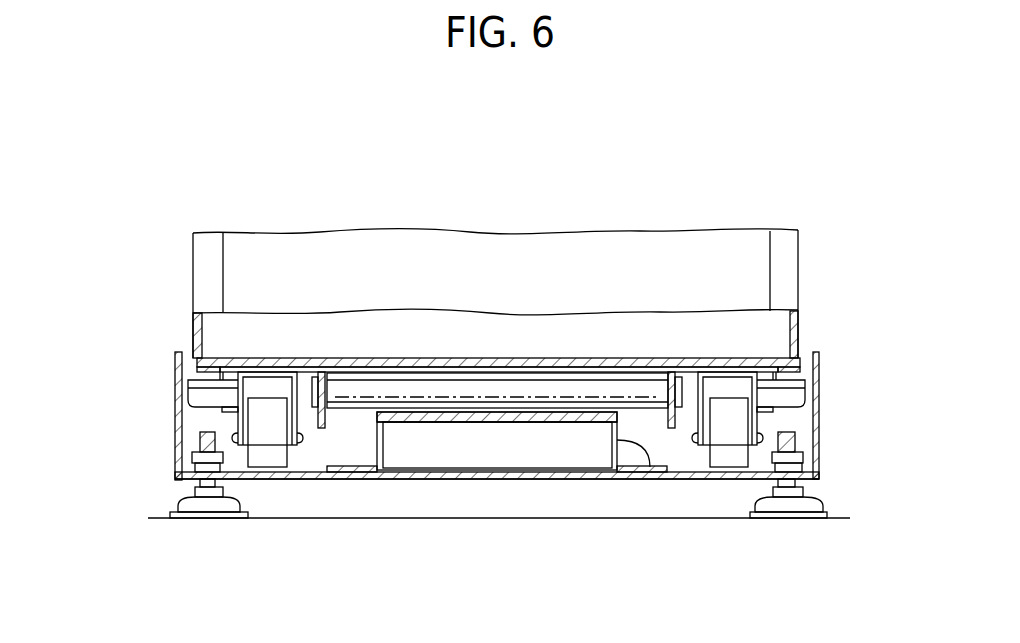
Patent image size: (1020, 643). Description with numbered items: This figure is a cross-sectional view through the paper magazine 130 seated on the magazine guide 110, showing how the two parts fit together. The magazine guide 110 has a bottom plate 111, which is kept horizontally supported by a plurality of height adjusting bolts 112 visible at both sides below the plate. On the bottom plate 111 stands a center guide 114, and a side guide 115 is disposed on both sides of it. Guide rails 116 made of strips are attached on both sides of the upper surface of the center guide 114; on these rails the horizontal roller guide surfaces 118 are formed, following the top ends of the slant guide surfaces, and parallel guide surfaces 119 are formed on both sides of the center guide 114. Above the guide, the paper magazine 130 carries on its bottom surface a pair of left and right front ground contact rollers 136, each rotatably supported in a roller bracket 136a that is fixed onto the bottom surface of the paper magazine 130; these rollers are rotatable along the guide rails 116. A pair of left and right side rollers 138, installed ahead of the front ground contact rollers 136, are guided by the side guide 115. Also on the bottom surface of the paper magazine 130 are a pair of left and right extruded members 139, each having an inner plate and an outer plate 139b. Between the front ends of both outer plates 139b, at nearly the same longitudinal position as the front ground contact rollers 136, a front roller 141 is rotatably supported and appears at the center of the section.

The paper magazine 130 is at (185, 225).
The magazine guide 110 is at (176, 452).
The bottom plate 111 is at (307, 479).
The height adjusting bolt 112 is at (195, 437).
The center guide 114 is at (535, 423).
The side guide 115 is at (176, 372).
The guide rail 116 is at (430, 420).
The horizontal roller guide surface 118 is at (430, 420).
The parallel guide surface 119 is at (650, 467).
The front ground contact roller 136 is at (270, 452).
The roller bracket 136a is at (243, 391).
The side roller 138 is at (198, 390).
The extruded member 139 is at (352, 372).
The outer plate 139b is at (320, 372).
The front roller 141 is at (367, 387).